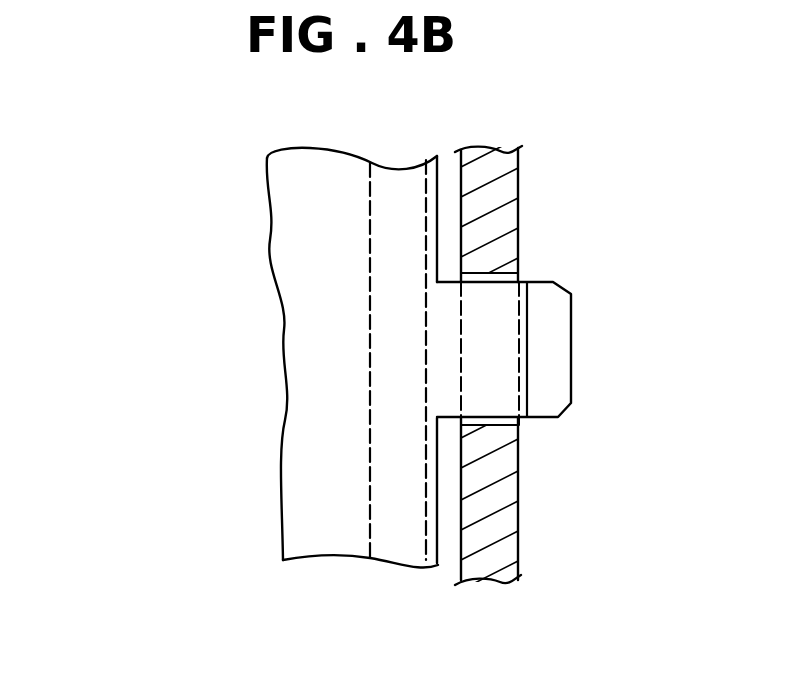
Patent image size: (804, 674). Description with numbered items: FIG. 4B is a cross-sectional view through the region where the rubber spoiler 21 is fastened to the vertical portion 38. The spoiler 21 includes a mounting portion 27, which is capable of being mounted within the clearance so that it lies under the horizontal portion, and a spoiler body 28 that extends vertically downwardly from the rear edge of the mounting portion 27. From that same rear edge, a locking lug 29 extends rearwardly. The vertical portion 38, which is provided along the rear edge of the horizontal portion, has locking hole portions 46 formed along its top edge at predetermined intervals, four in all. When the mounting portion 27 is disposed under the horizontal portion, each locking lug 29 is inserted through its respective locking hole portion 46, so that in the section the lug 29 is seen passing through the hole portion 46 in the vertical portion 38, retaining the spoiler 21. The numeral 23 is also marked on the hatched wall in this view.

The spoiler 21 is at (270, 238).
The tube 23 is at (522, 190).
The mounting portion 27 is at (333, 313).
The spoiler body 28 is at (370, 428).
The locking lug 29 is at (558, 354).
The vertical portion 38 is at (510, 252).
The locking hole portion 46 is at (473, 425).